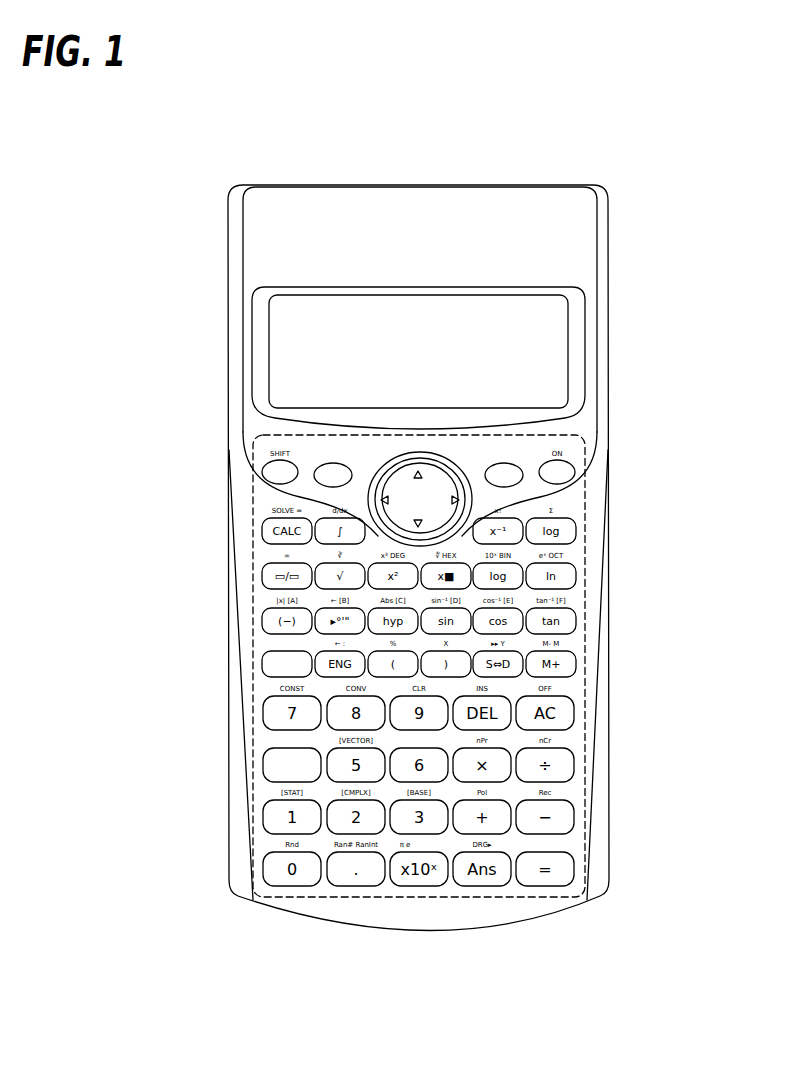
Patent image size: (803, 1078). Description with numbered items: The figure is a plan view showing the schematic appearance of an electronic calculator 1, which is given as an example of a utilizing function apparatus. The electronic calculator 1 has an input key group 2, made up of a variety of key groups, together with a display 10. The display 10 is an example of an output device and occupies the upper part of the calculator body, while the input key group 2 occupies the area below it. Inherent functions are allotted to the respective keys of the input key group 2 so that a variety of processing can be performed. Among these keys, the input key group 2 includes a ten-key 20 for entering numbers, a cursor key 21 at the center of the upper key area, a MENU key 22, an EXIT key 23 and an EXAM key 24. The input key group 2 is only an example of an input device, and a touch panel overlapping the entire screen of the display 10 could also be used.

The electronic calculator 1 is at (208, 242).
The input key group 2 is at (585, 617).
The display 10 is at (568, 348).
The ten-key 20 is at (280, 757).
The cursor key 21 is at (400, 518).
The MENU key 22 is at (510, 487).
The EXIT key 23 is at (272, 656).
The EXAM key 24 is at (333, 486).